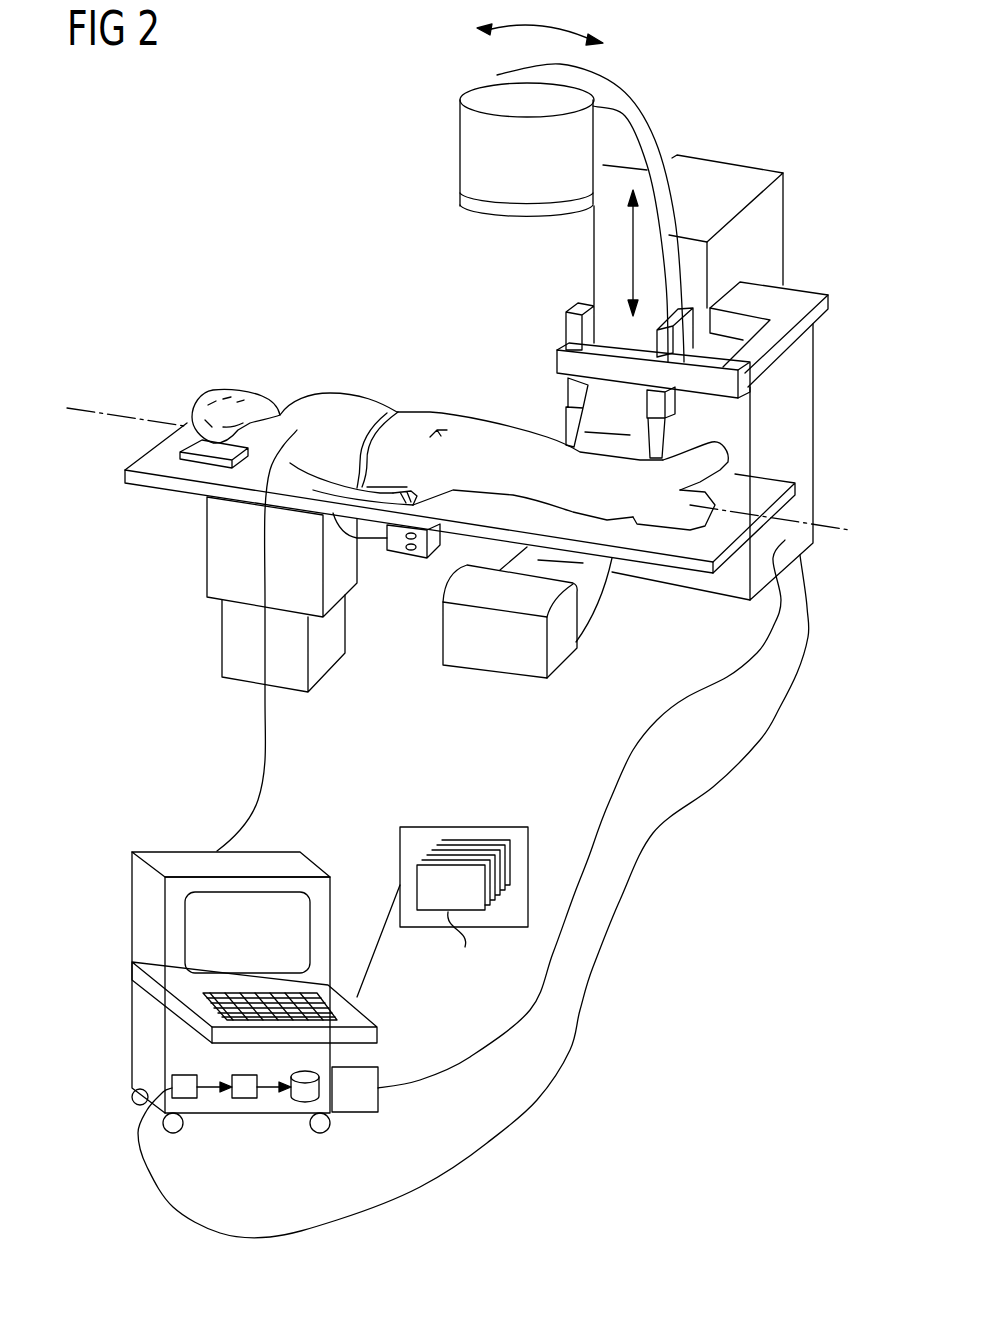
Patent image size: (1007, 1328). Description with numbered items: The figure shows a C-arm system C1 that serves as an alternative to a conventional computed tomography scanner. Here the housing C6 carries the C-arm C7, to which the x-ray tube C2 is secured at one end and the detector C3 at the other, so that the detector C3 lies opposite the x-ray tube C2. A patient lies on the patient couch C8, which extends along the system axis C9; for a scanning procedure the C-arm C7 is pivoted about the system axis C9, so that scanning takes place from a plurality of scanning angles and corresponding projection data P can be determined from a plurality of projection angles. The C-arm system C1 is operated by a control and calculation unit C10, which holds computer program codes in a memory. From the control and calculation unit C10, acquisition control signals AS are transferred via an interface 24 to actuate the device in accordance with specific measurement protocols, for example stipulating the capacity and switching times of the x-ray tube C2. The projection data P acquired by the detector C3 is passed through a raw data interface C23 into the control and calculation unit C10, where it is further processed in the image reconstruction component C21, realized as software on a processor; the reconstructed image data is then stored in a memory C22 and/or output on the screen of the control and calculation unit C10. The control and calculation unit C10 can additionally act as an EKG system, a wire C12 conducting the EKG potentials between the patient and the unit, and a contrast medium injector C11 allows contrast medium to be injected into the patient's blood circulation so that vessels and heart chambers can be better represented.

The C-arm system C1 is at (232, 252).
The x-ray tube C2 is at (459, 147).
The detector C3 is at (563, 650).
The housing C6 is at (774, 207).
The C-arm C7 is at (650, 123).
The patient couch C8 is at (148, 479).
The system axis C9 is at (118, 408).
The control and calculation unit C10 is at (143, 1020).
The contrast medium injector C11 is at (401, 543).
The wire C12 is at (268, 752).
The image reconstruction component C21 is at (242, 1100).
The memory C22 is at (302, 1105).
The raw data interface C23 is at (185, 1100).
The interface 24 is at (354, 1105).
The acquisition control signals AS is at (618, 765).
The projection measured data P is at (643, 850).